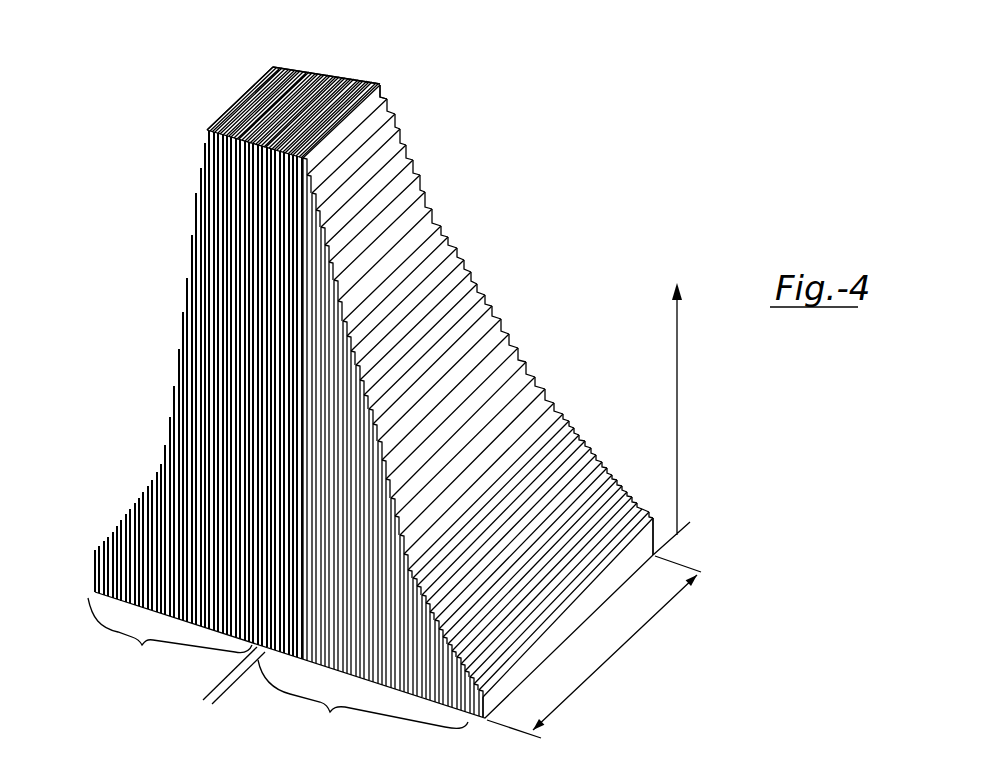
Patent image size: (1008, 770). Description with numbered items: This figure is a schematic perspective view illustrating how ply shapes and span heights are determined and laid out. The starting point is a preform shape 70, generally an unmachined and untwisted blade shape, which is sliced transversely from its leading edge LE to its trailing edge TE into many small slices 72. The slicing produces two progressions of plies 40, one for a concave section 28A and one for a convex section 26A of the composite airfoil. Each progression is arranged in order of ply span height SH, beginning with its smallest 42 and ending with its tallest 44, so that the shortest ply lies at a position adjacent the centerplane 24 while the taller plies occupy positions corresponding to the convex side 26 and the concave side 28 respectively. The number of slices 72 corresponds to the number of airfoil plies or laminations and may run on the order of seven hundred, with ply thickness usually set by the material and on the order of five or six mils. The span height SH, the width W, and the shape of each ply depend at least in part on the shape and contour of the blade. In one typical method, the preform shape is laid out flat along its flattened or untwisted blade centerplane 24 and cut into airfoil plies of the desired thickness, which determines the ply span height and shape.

The centerplane 24 is at (92, 592).
The convex side 26 is at (217, 687).
The convex section 26A is at (170, 639).
The concave side 28 is at (212, 693).
The concave section 28A is at (363, 713).
The plies 40 is at (513, 345).
The smallest ply 42 is at (651, 513).
The tallest ply 44 is at (293, 72).
The preform shape 70 is at (371, 83).
The slices 72 is at (427, 168).
The leading edge LE is at (201, 167).
The trailing edge TE is at (340, 83).
The ply span height SH is at (677, 382).
The width W is at (617, 648).